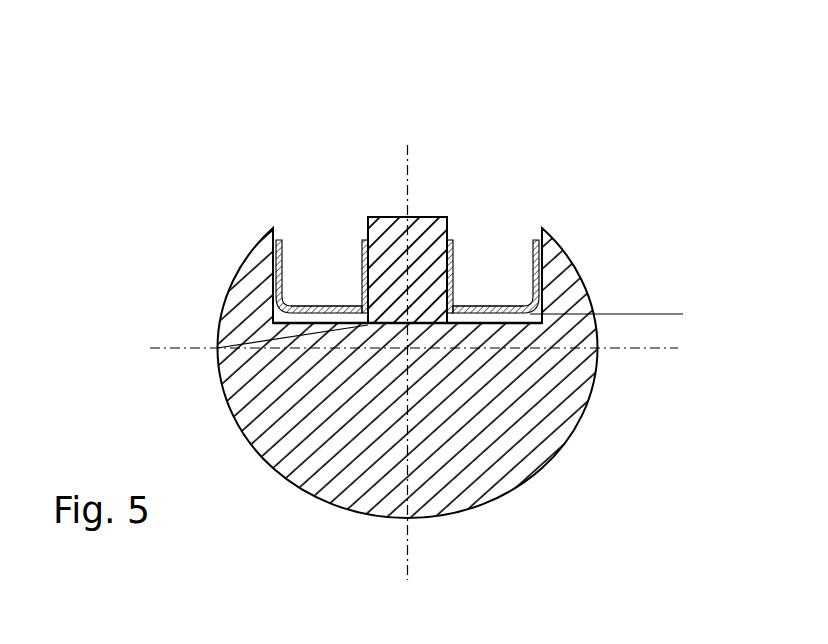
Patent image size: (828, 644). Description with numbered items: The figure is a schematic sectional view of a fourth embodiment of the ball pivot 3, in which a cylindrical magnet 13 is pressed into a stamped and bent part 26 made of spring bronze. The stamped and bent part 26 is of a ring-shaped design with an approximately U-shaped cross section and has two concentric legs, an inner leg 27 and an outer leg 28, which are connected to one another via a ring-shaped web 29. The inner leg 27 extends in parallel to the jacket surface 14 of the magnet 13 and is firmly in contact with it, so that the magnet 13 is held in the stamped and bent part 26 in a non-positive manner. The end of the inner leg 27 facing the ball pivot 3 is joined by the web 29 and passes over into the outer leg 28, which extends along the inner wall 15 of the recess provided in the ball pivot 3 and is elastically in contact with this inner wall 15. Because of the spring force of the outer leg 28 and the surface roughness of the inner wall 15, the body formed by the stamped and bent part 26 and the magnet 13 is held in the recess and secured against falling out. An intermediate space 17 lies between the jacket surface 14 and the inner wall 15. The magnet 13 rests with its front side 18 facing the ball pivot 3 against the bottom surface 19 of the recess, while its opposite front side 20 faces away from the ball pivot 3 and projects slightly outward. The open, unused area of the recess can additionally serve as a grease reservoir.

The ball pivot 3 is at (508, 463).
The magnet 13 is at (427, 216).
The jacket surface 14 is at (362, 242).
The inner wall 15 is at (627, 318).
The intermediate space 17 is at (482, 259).
The front side 18 is at (413, 325).
The bottom surface 19 is at (312, 326).
The front side 20 is at (387, 216).
The stamped and bent part 26 is at (493, 305).
The inner leg 27 is at (320, 304).
The outer leg 28 is at (537, 253).
The web 29 is at (288, 300).